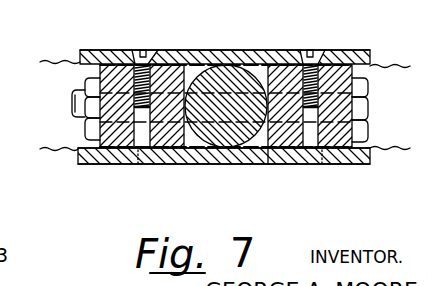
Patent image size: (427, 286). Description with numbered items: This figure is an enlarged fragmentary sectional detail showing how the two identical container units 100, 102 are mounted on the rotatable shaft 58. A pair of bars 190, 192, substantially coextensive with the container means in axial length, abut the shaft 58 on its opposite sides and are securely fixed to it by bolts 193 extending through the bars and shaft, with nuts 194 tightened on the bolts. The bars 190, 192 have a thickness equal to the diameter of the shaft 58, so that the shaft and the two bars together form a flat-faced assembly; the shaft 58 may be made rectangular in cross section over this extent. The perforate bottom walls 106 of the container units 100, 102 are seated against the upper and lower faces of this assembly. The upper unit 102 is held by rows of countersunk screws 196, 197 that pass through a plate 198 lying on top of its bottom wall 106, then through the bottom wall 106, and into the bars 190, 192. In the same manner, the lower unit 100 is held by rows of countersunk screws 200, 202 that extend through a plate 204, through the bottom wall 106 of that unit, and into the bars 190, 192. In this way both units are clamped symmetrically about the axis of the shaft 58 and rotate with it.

The shaft 58 is at (198, 155).
The container unit 100 is at (69, 148).
The container unit 102 is at (69, 60).
The bottom wall 106 is at (203, 53).
The bar 190 is at (115, 80).
The bar 192 is at (338, 80).
The bolt 193 is at (362, 111).
The nut 194 is at (92, 128).
The countersunk screw 196 is at (155, 50).
The countersunk screw 197 is at (320, 62).
The plate 198 is at (248, 52).
The countersunk screw 200 is at (140, 162).
The countersunk screw 202 is at (323, 162).
The plate 204 is at (270, 160).